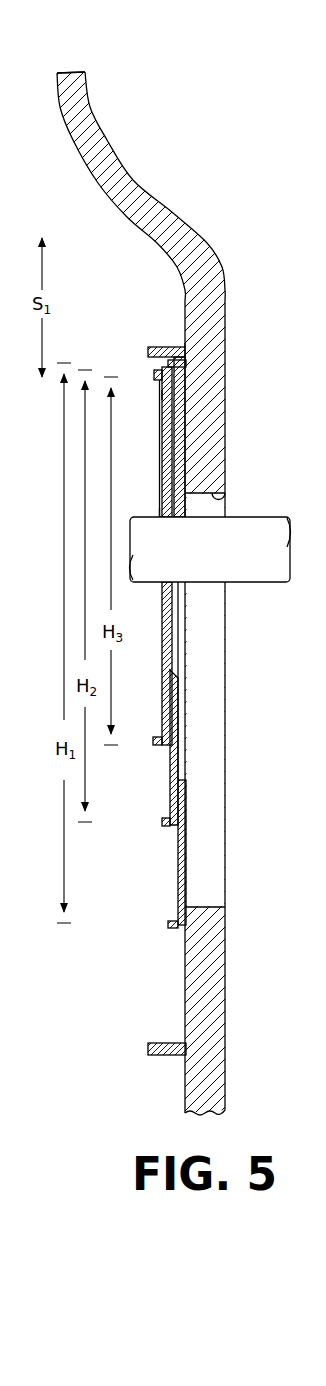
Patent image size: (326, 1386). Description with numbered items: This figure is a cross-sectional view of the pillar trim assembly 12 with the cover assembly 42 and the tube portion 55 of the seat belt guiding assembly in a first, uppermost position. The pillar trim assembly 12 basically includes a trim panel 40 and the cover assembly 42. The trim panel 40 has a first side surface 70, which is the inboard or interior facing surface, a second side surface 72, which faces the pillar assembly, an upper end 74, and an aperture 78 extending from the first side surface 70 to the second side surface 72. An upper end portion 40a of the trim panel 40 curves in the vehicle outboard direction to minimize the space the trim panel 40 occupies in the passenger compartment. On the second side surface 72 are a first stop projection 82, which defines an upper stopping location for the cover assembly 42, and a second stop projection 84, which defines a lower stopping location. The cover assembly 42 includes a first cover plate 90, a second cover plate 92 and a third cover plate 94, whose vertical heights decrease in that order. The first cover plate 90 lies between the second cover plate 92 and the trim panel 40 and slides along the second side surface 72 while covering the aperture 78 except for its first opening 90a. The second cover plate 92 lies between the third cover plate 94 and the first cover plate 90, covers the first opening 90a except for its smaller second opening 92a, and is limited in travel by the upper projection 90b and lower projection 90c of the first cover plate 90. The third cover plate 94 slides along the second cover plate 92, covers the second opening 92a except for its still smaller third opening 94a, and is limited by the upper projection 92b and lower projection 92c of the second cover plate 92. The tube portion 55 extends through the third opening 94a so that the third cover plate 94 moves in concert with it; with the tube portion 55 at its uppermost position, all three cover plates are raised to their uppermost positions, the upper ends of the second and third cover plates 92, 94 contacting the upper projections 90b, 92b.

The pillar trim assembly 12 is at (144, 99).
The trim panel 40 is at (227, 290).
The upper end portion 40a is at (155, 210).
The cover assembly 42 is at (157, 392).
The tube portion 55 is at (270, 525).
The first side surface 70 is at (226, 408).
The second side surface 72 is at (184, 297).
The upper end 74 is at (76, 72).
The aperture 78 is at (222, 500).
The first stop projection 82 is at (184, 344).
The second stop projection 84 is at (160, 1057).
The first cover plate 90 is at (181, 441).
The first opening 90a is at (182, 747).
The upper projection 90b is at (175, 348).
The lower projection 90c is at (176, 927).
The second cover plate 92 is at (172, 477).
The second opening 92a is at (172, 658).
The upper projection 92b is at (171, 363).
The lower projection 92c is at (168, 826).
The third cover plate 94 is at (167, 510).
The third opening 94a is at (162, 518).